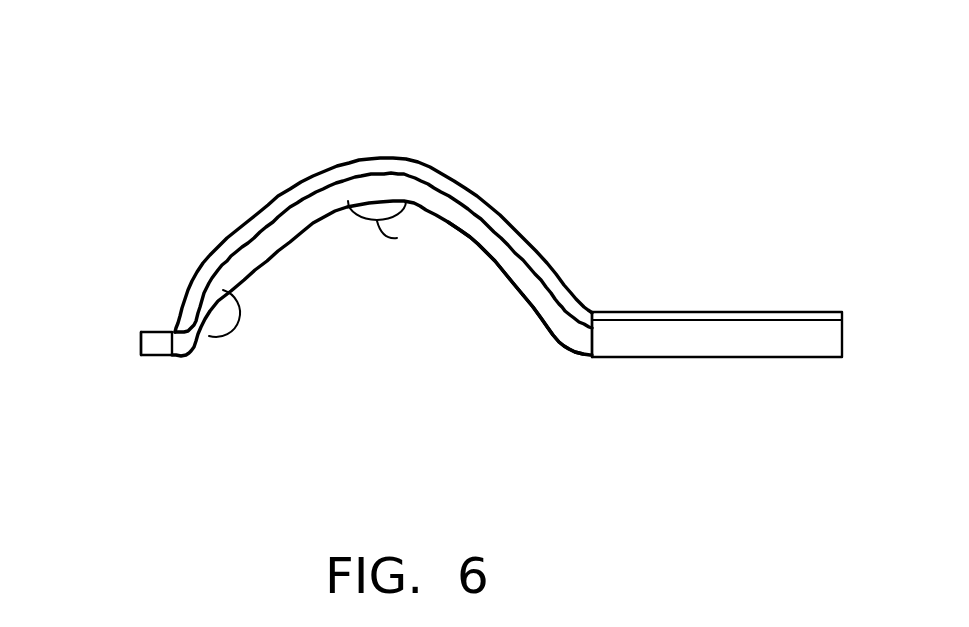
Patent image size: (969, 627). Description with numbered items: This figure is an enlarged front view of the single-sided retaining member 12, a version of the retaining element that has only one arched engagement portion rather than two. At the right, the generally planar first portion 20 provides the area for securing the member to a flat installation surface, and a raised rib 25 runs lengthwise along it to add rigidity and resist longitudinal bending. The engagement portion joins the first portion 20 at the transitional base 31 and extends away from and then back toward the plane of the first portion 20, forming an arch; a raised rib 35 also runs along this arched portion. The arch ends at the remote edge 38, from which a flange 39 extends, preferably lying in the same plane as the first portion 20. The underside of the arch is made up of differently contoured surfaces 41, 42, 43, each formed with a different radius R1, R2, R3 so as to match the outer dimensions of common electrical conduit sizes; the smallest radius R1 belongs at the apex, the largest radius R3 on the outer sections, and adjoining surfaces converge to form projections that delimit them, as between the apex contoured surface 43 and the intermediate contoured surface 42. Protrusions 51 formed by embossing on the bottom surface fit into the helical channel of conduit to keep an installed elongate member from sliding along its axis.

The retaining member 12 is at (562, 160).
The first portion 20 is at (678, 358).
The raised rib 25 is at (770, 312).
The transitional base 31 is at (593, 312).
The raised rib 35 is at (262, 206).
The remote edge 38 is at (172, 332).
The flange 39 is at (141, 342).
The contoured surface 41 is at (541, 320).
The contoured surface 42 is at (487, 256).
The contoured surface 43 is at (422, 204).
The protrusion 51 is at (410, 227).
The radius R1 is at (332, 212).
The radius R2 is at (283, 245).
The radius R3 is at (245, 277).